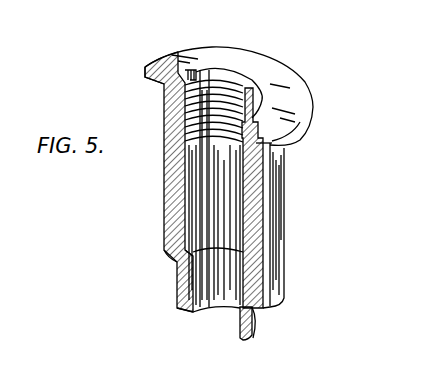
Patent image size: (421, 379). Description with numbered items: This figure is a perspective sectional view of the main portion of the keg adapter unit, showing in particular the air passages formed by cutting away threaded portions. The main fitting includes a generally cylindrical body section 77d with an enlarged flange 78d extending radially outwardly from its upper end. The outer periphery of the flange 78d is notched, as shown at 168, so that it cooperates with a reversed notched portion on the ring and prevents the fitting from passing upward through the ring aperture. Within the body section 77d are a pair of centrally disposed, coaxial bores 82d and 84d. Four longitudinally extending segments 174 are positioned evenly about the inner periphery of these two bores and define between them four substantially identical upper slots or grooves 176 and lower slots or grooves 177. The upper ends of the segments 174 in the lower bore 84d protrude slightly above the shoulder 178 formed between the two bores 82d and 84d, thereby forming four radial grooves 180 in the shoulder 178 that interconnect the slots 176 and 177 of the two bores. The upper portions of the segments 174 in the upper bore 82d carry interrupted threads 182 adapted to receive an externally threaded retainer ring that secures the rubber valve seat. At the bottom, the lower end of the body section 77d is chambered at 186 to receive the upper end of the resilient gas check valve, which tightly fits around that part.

The notch 168 is at (152, 67).
The enlarged flange 78d is at (197, 50).
The upper slots or grooves 176 is at (204, 82).
The longitudinally extending segments 174 is at (230, 97).
The interrupted threads 182 is at (247, 110).
The upper bore 82d is at (190, 176).
The body section 77d is at (277, 213).
The radial grooves 180 is at (200, 250).
The shoulder 178 is at (196, 264).
The lower bore 84d is at (192, 310).
The lower slots or grooves 177 is at (218, 310).
The chambered lower end 186 is at (258, 322).